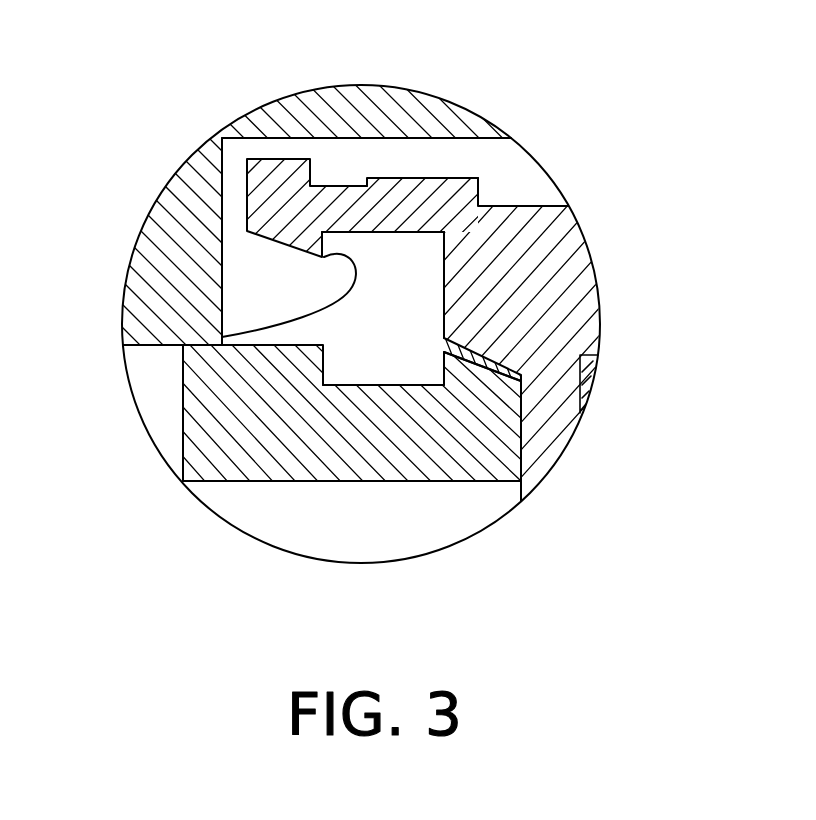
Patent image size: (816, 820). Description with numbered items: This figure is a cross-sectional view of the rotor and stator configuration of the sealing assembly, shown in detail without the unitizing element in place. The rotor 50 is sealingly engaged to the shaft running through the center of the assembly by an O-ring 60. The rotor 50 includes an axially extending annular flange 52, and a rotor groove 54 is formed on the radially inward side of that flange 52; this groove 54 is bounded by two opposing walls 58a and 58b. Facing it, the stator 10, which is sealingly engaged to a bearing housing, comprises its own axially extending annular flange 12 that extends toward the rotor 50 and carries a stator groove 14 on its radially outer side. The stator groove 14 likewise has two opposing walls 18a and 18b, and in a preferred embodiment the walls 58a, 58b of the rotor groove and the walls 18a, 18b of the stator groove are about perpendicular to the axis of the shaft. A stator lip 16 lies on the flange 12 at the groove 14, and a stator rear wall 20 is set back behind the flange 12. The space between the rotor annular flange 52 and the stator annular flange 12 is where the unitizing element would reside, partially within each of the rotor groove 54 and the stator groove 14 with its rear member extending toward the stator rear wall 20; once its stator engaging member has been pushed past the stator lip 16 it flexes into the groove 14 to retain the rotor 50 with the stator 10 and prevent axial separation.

The stator 10 is at (168, 243).
The stator annular flange 12 is at (217, 425).
The stator groove 14 is at (413, 407).
The stator lip 16 is at (523, 415).
The stator groove wall 18a is at (525, 463).
The stator groove wall 18b is at (403, 370).
The stator rear wall 20 is at (222, 257).
The rotor 50 is at (540, 311).
The rotor annular flange 52 is at (291, 179).
The rotor groove 54 is at (326, 257).
The rotor groove wall 58a is at (444, 253).
The rotor groove wall 58b is at (183, 346).
The O-ring 60 is at (588, 385).